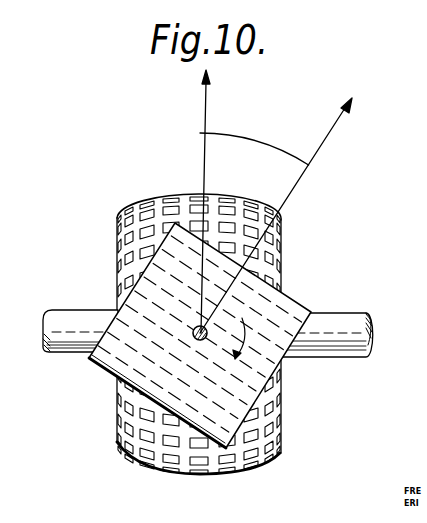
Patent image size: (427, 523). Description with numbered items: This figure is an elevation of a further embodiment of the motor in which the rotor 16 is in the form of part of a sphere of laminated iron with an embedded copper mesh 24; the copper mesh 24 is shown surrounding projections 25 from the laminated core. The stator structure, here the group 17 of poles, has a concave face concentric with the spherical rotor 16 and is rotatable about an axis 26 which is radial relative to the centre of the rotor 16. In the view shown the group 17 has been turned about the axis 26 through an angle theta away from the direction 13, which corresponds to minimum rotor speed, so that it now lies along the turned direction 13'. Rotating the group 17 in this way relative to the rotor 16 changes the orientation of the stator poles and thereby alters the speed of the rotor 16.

The direction 13 is at (187, 201).
The turned direction 13' is at (284, 215).
The rotor 16 is at (281, 432).
The group of poles 17 is at (200, 333).
The copper mesh 24 is at (188, 201).
The projections 25 is at (253, 205).
The axis 26 is at (114, 383).